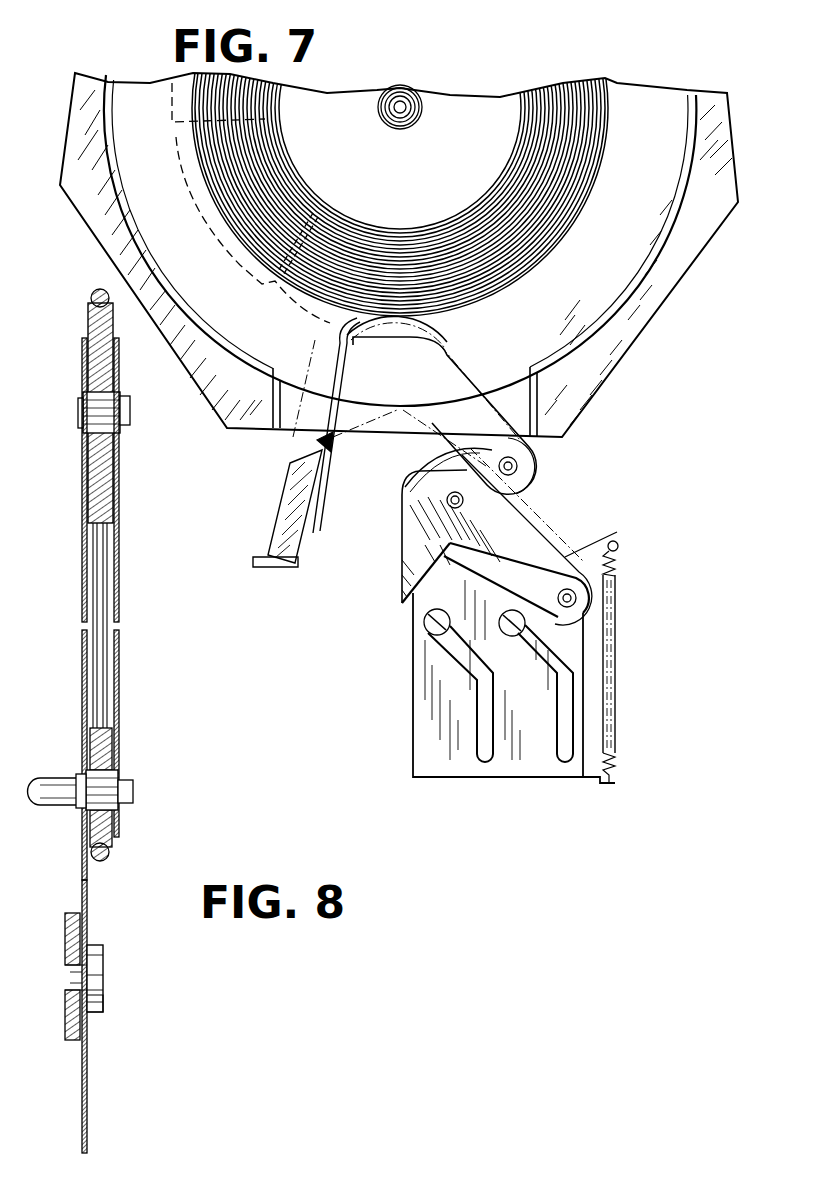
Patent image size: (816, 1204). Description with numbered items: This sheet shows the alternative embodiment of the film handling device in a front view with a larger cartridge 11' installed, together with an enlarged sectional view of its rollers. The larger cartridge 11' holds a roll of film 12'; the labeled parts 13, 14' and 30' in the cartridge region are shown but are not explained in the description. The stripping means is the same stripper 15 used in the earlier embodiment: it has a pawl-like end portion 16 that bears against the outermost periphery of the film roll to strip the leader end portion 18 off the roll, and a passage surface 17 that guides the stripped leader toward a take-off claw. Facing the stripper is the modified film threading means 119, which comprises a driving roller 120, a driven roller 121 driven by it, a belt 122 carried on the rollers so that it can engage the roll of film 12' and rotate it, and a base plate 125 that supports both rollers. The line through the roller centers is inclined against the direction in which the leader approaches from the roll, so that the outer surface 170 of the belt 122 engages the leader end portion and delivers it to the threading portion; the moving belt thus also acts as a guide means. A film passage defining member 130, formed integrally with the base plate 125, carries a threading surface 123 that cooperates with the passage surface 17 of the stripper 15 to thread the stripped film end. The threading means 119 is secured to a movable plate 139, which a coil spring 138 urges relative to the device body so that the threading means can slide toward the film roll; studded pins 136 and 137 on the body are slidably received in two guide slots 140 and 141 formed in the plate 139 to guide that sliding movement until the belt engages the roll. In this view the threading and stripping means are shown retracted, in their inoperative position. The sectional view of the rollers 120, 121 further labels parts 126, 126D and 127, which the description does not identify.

In FIG. 7, the larger cartridge 11' is at (407, 255).
In FIG. 7, the roll of film 12' is at (390, 161).
In FIG. 7, the center hole 13 is at (401, 101).
In FIG. 7, the housing rim 14' is at (653, 71).
In FIG. 7, the stripper 15 is at (290, 511).
In FIG. 7, the pawl-like end portion 16 is at (318, 441).
In FIG. 7, the passage surface 17 is at (305, 550).
In FIG. 7, the leader end portion 18 is at (320, 522).
In FIG. 7, the slot 30' is at (258, 400).
In FIG. 7, the film threading means 119 is at (518, 540).
In FIG. 7, the driving roller 120 is at (580, 602).
In FIG. 8, the driving roller 120 is at (110, 847).
In FIG. 7, the driven roller 121 is at (443, 464).
In FIG. 8, the driven roller 121 is at (92, 319).
In FIG. 7, the belt 122 is at (617, 535).
In FIG. 8, the belt 122 is at (97, 290).
In FIG. 7, the threading surface 123 is at (400, 540).
In FIG. 7, the base plate 125 is at (500, 521).
In FIG. 8, the base plate 125 is at (84, 550).
In FIG. 7, the nut 126 is at (556, 598).
In FIG. 8, the nut 126 is at (133, 791).
In FIG. 8, the shaft 126D is at (58, 782).
In FIG. 7, the pivot hole / nut 127 is at (447, 500).
In FIG. 8, the pivot hole / nut 127 is at (130, 412).
In FIG. 7, the film passage defining member 130 is at (407, 508).
In FIG. 7, the studded pin 136 is at (424, 616).
In FIG. 7, the studded pin 137 is at (515, 636).
In FIG. 8, the studded pin 137 is at (95, 962).
In FIG. 7, the coil spring 138 is at (617, 658).
In FIG. 7, the movable plate 139 is at (433, 697).
In FIG. 8, the movable plate 139 is at (86, 926).
In FIG. 7, the guide slot 140 is at (493, 733).
In FIG. 7, the guide slot 141 is at (565, 733).
In FIG. 8, the guide slot 141 is at (88, 1003).
In FIG. 7, the outer surface of the belt 170 is at (530, 360).